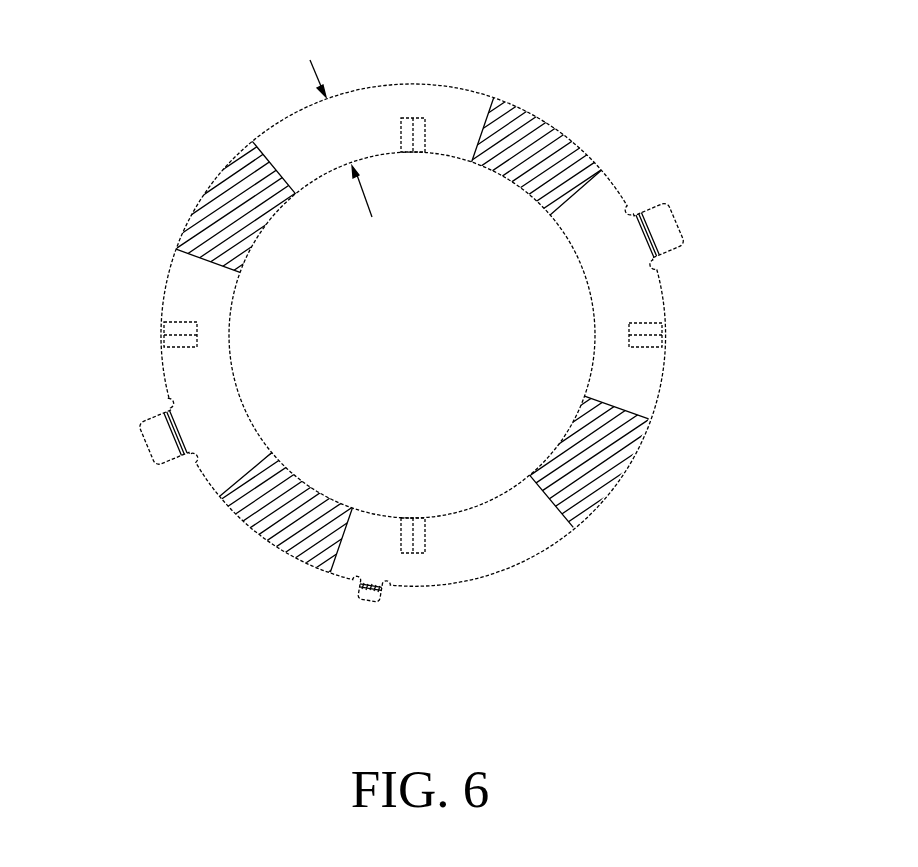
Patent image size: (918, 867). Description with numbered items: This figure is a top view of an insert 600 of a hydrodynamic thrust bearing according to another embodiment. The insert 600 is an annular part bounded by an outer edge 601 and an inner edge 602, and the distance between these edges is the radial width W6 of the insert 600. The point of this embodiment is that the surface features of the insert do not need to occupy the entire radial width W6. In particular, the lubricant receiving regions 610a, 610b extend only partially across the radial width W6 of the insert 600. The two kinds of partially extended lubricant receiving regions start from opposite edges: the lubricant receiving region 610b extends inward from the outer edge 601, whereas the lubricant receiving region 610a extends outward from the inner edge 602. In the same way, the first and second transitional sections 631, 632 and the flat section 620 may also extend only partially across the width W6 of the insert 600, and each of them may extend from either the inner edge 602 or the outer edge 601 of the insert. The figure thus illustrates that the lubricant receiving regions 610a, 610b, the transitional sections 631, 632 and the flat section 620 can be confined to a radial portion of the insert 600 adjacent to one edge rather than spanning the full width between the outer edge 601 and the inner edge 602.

The insert 600 is at (419, 334).
The outer edge 601 is at (603, 173).
The inner edge 602 is at (551, 216).
The lubricant receiving region 610a is at (413, 118).
The lubricant receiving region 610b is at (165, 330).
The flat section 620 is at (603, 460).
The first transitional section 631 is at (510, 528).
The second transitional section 632 is at (635, 390).
The radial width W6 is at (341, 138).